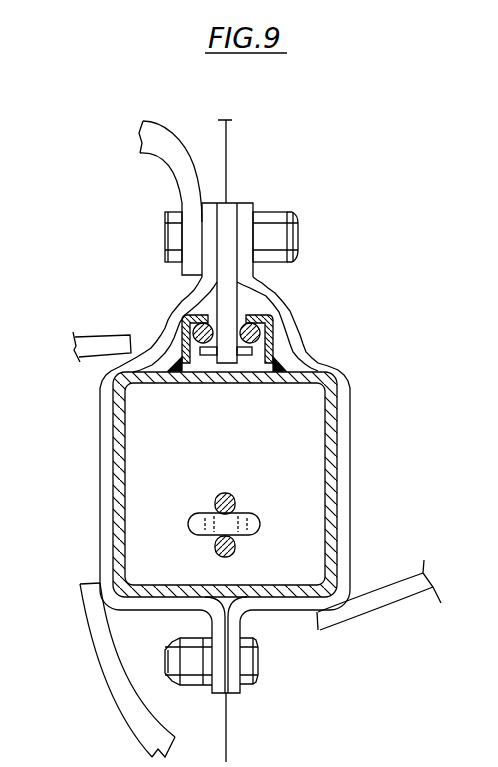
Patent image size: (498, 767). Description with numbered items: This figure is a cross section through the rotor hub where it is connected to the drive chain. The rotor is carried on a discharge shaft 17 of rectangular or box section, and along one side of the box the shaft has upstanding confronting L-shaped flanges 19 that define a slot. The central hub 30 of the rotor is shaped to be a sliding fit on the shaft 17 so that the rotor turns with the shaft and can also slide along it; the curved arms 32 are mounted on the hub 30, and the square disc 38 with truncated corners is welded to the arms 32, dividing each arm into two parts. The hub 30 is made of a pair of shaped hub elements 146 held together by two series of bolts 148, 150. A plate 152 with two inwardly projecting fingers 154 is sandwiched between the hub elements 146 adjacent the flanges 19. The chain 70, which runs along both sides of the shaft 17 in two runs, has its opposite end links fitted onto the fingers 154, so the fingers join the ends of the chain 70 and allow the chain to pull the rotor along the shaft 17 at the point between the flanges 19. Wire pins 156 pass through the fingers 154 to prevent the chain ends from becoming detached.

The discharge shaft 17 is at (318, 484).
The L-shaped flanges 19 is at (305, 356).
The central hub 30 is at (167, 332).
The curved arms 32 is at (165, 155).
The square disc 38 is at (234, 124).
The chain 70 is at (258, 332).
The shaped hub elements 146 is at (105, 482).
The bolts 148 is at (167, 233).
The bolts 150 is at (247, 660).
The plate 152 is at (225, 220).
The inwardly projecting fingers 154 is at (222, 323).
The wire pins 156 is at (242, 355).